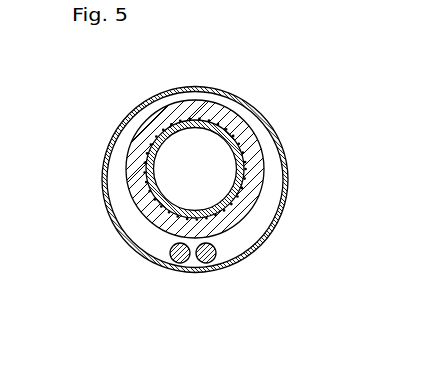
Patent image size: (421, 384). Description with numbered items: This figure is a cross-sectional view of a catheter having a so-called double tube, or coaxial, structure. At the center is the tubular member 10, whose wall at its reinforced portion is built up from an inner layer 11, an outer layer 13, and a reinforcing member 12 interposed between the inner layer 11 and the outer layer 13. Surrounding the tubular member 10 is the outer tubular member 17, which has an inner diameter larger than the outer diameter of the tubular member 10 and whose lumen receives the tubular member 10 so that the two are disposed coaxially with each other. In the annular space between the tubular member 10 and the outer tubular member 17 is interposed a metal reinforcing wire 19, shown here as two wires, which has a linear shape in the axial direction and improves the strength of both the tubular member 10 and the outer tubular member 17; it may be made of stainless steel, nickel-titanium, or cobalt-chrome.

The tubular member 10 is at (230, 110).
The inner layer 11 is at (150, 183).
The reinforcing member 12 is at (160, 133).
The outer layer 13 is at (137, 207).
The outer tubular member 17 is at (250, 255).
The metal reinforcing wire 19 is at (180, 258).